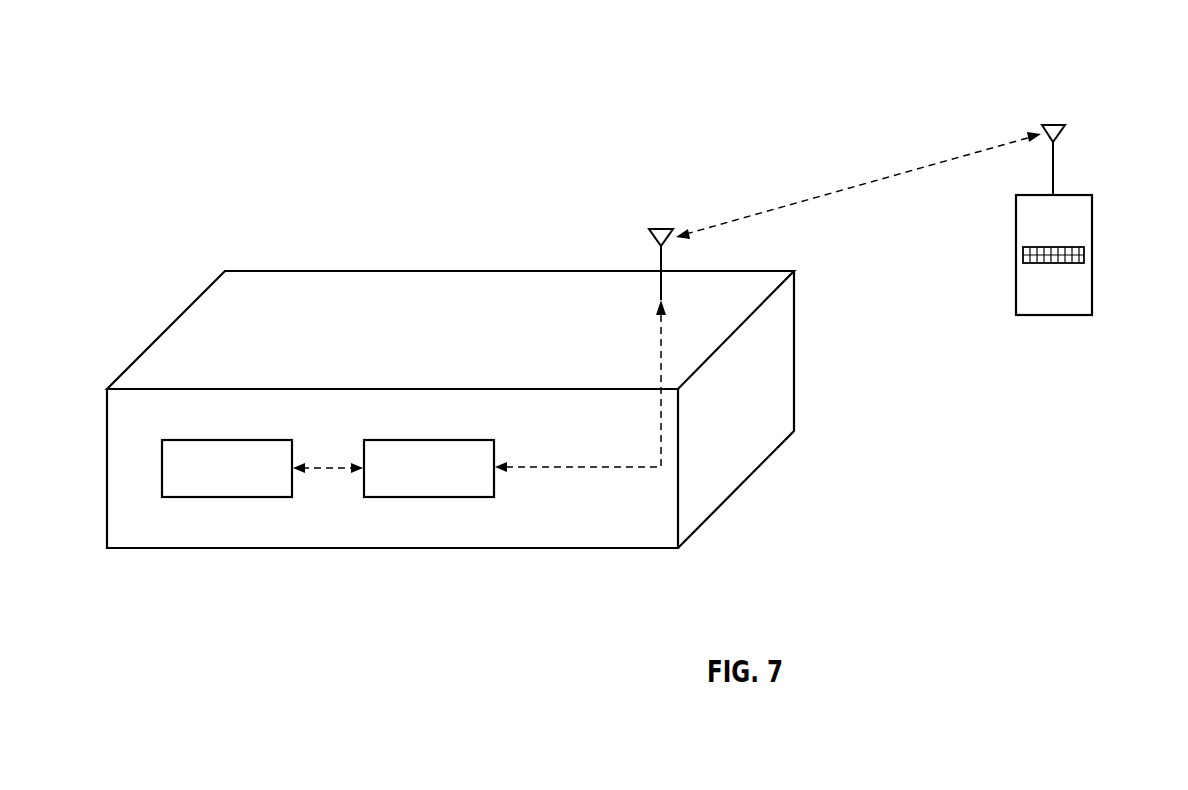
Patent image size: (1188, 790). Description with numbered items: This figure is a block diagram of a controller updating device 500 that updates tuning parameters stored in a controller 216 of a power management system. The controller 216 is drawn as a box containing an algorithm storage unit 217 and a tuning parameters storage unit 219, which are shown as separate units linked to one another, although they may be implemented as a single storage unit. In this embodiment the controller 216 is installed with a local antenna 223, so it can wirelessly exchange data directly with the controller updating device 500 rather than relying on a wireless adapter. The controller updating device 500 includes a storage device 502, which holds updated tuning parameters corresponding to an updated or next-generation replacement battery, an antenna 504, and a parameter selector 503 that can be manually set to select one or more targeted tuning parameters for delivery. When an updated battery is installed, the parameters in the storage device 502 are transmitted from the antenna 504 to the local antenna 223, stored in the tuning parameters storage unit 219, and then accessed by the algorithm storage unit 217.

The controller 216 is at (290, 262).
The algorithm storage unit 217 is at (205, 481).
The tuning parameters storage unit 219 is at (407, 481).
The local antenna 223 is at (655, 228).
The controller updating device 500 is at (1090, 221).
The storage device 502 is at (1052, 318).
The parameter selector 503 is at (1086, 255).
The antenna 504 is at (1050, 123).